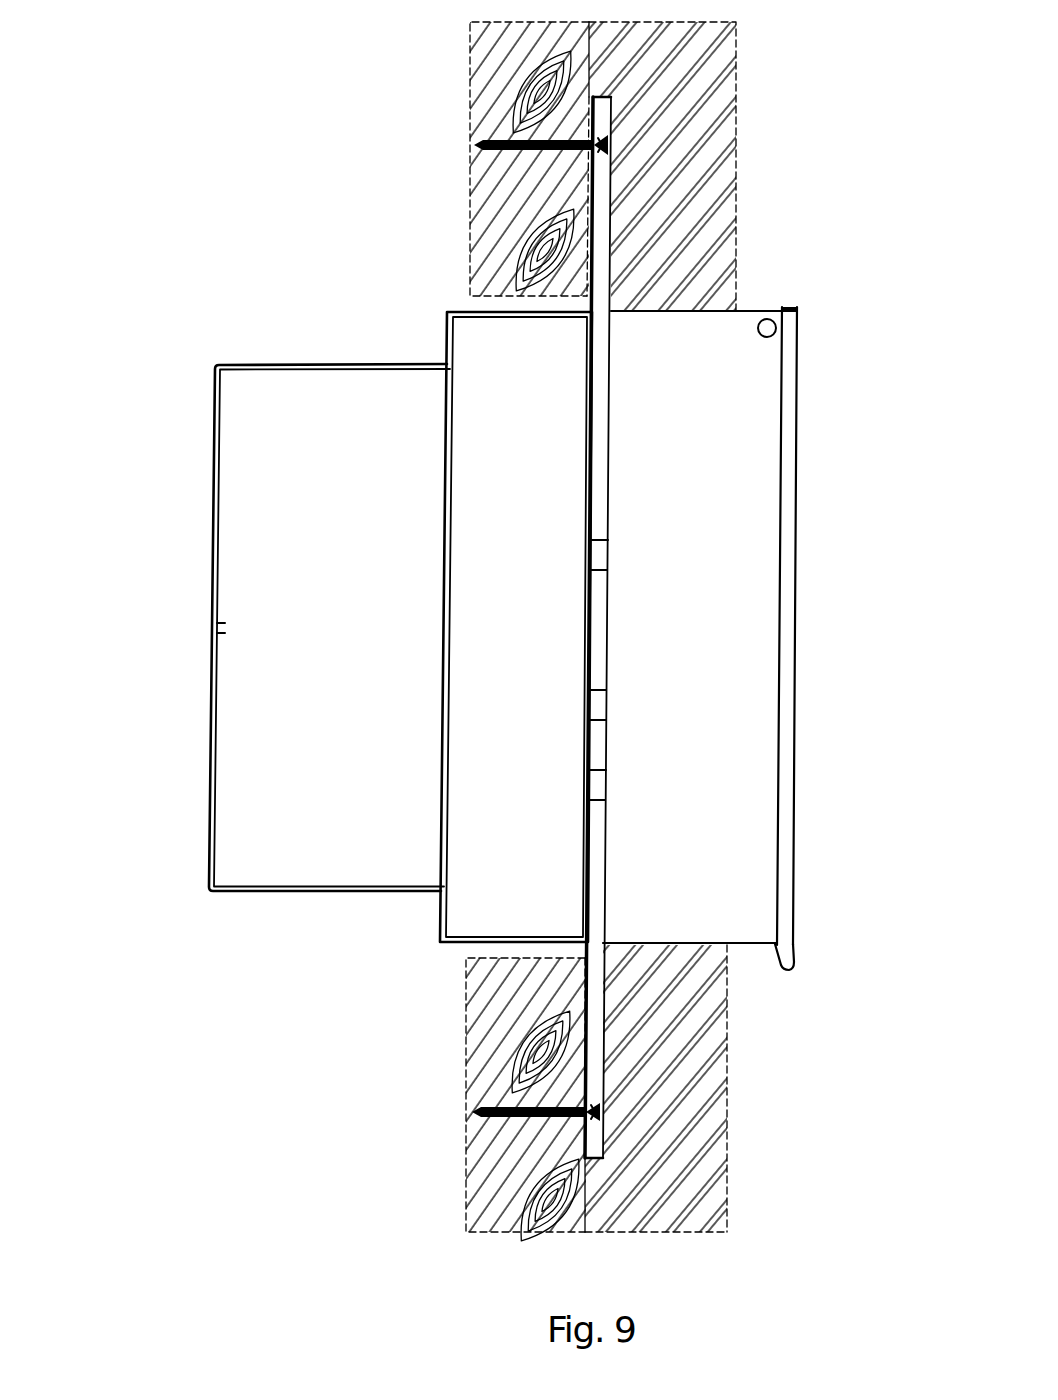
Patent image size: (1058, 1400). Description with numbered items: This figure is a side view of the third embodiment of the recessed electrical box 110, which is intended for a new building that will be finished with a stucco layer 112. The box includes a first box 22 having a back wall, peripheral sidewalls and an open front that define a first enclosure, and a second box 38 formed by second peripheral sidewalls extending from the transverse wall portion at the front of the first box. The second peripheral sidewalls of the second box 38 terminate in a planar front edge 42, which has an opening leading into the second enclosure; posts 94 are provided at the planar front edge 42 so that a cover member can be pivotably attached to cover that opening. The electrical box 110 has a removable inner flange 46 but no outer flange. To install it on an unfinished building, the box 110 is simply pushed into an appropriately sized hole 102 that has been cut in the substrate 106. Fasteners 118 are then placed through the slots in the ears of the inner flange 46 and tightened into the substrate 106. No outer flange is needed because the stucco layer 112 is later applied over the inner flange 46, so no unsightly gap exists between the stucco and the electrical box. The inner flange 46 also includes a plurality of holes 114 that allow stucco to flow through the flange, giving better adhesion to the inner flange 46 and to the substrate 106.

The first box 22 is at (325, 539).
The second box 38 is at (548, 485).
The planar front edge 42 is at (798, 503).
The inner flange 46 is at (600, 115).
The posts 94 is at (760, 336).
The hole 102 is at (487, 298).
The substrate 106 is at (487, 101).
The recessed electrical box (third embodiment) 110 is at (272, 306).
The stucco layer 112 is at (701, 215).
The holes 114 is at (596, 786).
The fasteners 118 is at (548, 152).